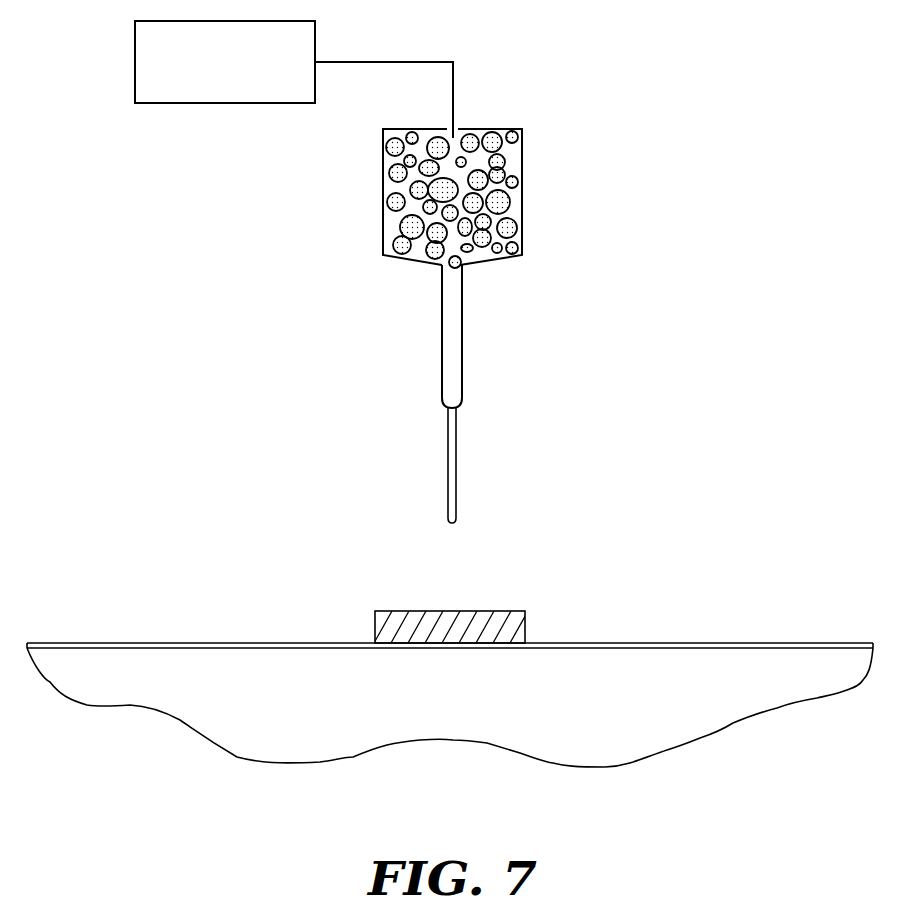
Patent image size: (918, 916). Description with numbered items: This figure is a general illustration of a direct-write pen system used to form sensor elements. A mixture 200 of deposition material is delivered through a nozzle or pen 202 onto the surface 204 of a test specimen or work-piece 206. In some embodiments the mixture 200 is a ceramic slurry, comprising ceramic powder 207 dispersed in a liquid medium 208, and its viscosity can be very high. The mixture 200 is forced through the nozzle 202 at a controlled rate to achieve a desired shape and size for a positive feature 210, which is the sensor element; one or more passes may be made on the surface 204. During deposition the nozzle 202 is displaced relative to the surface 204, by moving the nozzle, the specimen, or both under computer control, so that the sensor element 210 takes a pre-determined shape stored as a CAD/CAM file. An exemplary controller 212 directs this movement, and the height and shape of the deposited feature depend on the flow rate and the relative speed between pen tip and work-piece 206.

The mixture 200 is at (446, 468).
The nozzle 202 is at (458, 410).
The surface 204 is at (728, 641).
The test specimen/work-piece 206 is at (690, 729).
The ceramic powder 207 is at (492, 137).
The liquid medium 208 is at (515, 165).
The positive feature 210 is at (518, 628).
The controller 212 is at (201, 90).